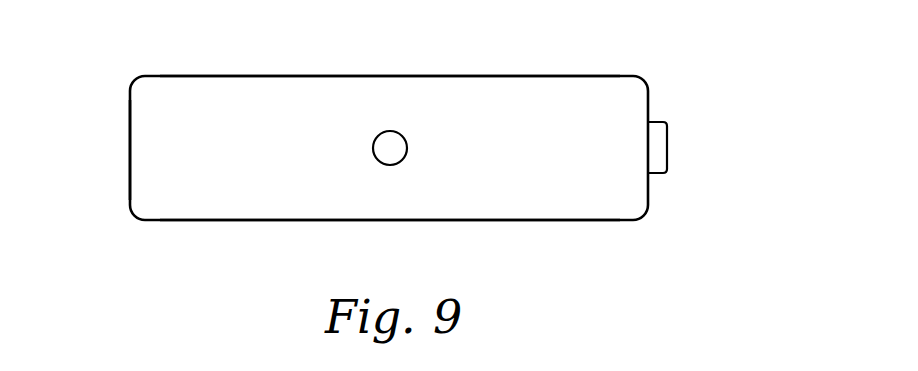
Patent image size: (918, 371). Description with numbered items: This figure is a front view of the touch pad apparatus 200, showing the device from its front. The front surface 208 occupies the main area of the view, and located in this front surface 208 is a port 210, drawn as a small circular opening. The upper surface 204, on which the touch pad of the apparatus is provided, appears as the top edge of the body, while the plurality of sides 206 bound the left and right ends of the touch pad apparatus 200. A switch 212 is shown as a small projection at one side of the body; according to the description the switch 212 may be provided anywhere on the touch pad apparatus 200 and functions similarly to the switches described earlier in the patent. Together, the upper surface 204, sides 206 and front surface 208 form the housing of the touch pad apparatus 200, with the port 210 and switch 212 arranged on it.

The touch pad apparatus 200 is at (645, 80).
The upper surface 204 is at (492, 75).
The sides 206 is at (130, 142).
The front surface 208 is at (524, 195).
The port 210 is at (385, 137).
The switch 212 is at (665, 155).